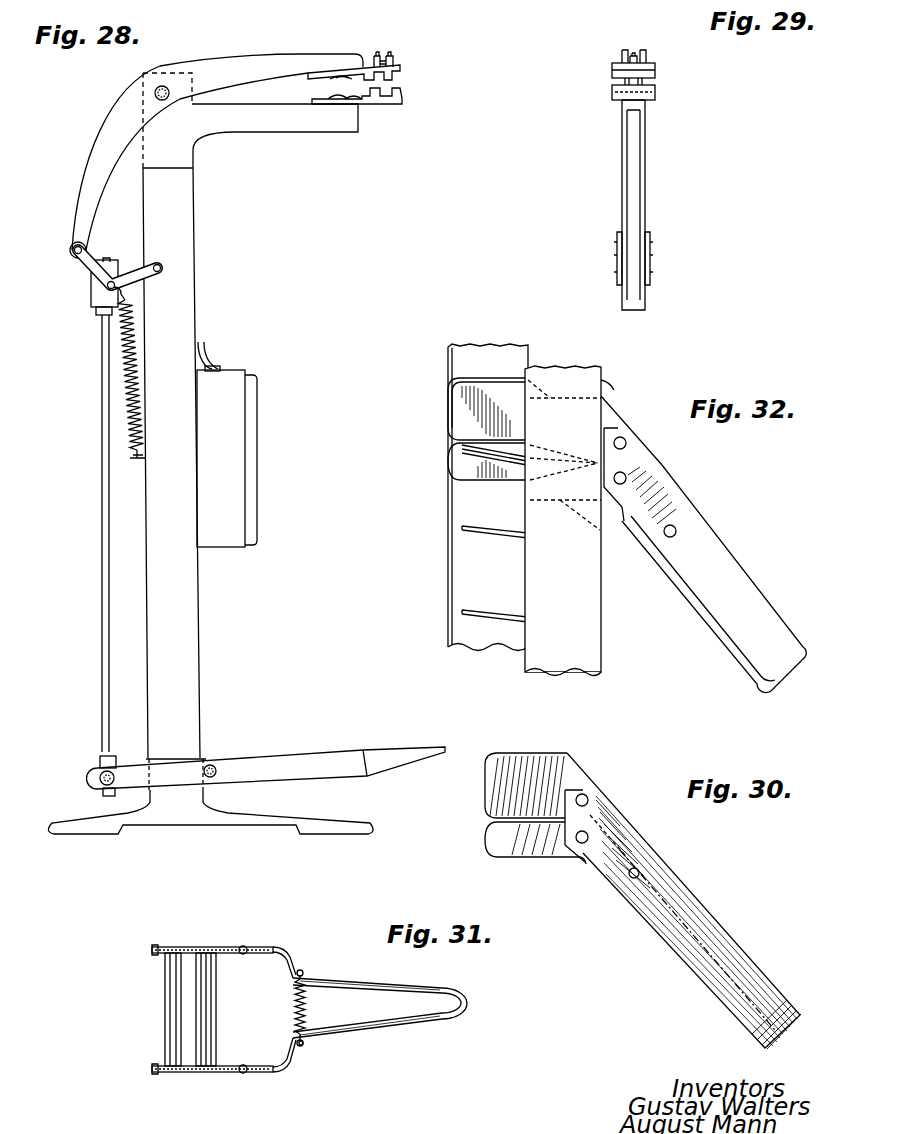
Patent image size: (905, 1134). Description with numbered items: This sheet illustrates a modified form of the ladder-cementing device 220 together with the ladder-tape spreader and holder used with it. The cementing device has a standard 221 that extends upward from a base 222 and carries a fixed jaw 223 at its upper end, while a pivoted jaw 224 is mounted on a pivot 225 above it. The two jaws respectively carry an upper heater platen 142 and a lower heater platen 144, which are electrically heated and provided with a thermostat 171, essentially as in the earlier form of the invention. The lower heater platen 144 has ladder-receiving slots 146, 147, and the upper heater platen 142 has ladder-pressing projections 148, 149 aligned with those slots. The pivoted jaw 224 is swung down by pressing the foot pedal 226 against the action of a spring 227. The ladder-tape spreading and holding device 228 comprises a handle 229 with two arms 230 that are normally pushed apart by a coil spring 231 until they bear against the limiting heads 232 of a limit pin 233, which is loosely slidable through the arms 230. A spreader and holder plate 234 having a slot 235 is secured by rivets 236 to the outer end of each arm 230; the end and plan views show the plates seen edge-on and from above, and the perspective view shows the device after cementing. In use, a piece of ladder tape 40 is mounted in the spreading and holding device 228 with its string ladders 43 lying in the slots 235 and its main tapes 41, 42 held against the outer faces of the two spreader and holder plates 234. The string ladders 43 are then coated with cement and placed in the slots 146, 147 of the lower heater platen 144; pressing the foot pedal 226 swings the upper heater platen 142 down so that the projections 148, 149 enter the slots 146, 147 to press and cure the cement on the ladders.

In FIG. 32, the ladder tape 40 is at (447, 508).
In FIG. 32, the main tape 41 is at (500, 344).
In FIG. 31, the main tape 41 is at (188, 948).
In FIG. 32, the main tape 42 is at (563, 366).
In FIG. 31, the main tape 42 is at (212, 1074).
In FIG. 31, the string ladders 43 is at (165, 1003).
In FIG. 28, the upper heater platen 142 is at (403, 70).
In FIG. 29, the upper heater platen 142 is at (655, 71).
In FIG. 28, the lower heater platen 144 is at (403, 98).
In FIG. 29, the lower heater platen 144 is at (657, 93).
In FIG. 28, the ladder-receiving slot 146 is at (378, 101).
In FIG. 28, the ladder-receiving slot 147 is at (404, 91).
In FIG. 28, the ladder-pressing projection 148 is at (330, 84).
In FIG. 28, the ladder-pressing projection 149 is at (401, 75).
In FIG. 28, the thermostat 171 is at (386, 64).
In FIG. 28, the ladder-cementing device 220 is at (203, 232).
In FIG. 28, the standard 221 is at (197, 658).
In FIG. 28, the base 222 is at (294, 816).
In FIG. 28, the fixed jaw 223 is at (316, 126).
In FIG. 29, the fixed jaw 223 is at (620, 113).
In FIG. 28, the pivoted jaw 224 is at (220, 63).
In FIG. 29, the pivoted jaw 224 is at (646, 60).
In FIG. 28, the pivot 225 is at (155, 94).
In FIG. 28, the foot pedal 226 is at (393, 748).
In FIG. 28, the spring 227 is at (123, 390).
In FIG. 32, the ladder-tape spreading and holding device 228 is at (666, 462).
In FIG. 30, the ladder-tape spreading and holding device 228 is at (700, 897).
In FIG. 31, the ladder-tape spreading and holding device 228 is at (331, 977).
In FIG. 32, the handle 229 is at (708, 553).
In FIG. 30, the handle 229 is at (735, 953).
In FIG. 31, the handle 229 is at (458, 998).
In FIG. 31, the arms 230 is at (355, 983).
In FIG. 31, the coil spring 231 is at (306, 1005).
In FIG. 31, the limiting heads 232 is at (301, 970).
In FIG. 32, the limit pin 233 is at (677, 530).
In FIG. 30, the limit pin 233 is at (641, 874).
In FIG. 31, the limit pin 233 is at (306, 1043).
In FIG. 32, the spreader and holder plate 234 is at (452, 463).
In FIG. 30, the spreader and holder plate 234 is at (520, 753).
In FIG. 31, the spreader and holder plate 234 is at (152, 952).
In FIG. 30, the slot 235 is at (493, 826).
In FIG. 32, the rivets 236 is at (627, 475).
In FIG. 30, the rivets 236 is at (590, 834).
In FIG. 31, the rivets 236 is at (244, 947).